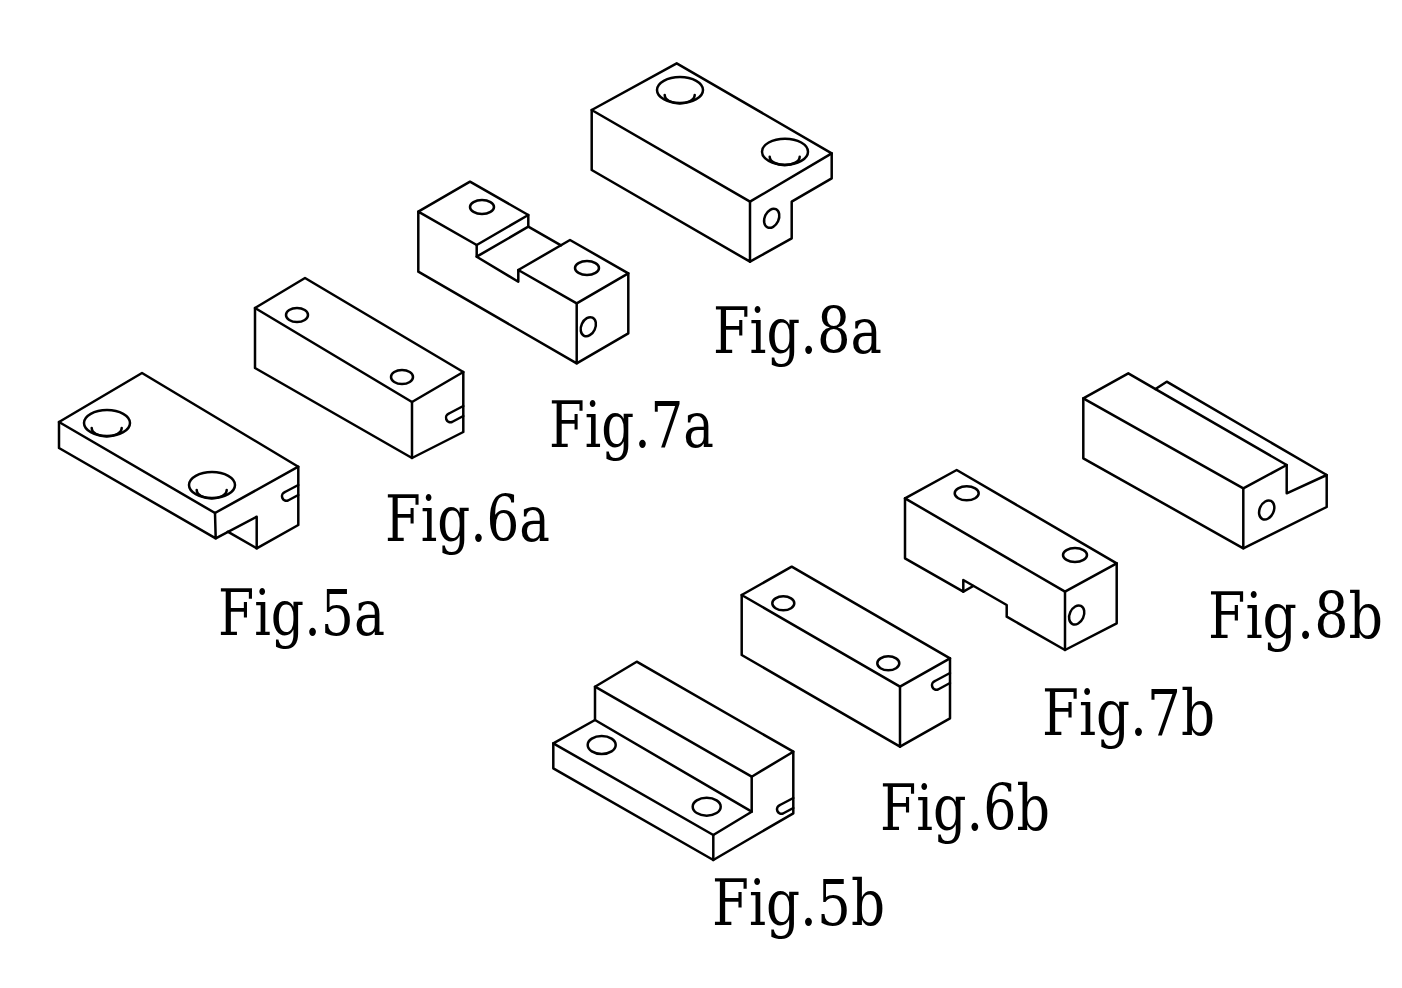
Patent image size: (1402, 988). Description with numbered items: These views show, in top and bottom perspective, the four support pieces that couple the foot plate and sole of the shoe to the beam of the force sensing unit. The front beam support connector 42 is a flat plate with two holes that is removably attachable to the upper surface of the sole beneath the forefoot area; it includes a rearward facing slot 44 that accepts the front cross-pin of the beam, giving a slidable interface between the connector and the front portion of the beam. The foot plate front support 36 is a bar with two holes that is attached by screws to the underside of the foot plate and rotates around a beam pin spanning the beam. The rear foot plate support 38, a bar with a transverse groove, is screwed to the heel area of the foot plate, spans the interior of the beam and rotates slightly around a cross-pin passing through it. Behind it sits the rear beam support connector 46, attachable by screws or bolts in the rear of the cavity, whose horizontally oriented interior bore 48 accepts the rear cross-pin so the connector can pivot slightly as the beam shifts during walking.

In FIG. 6A, the foot plate front support 36 is at (268, 347).
In FIG. 6B, the foot plate front support 36 is at (755, 620).
In FIG. 7A, the rear foot plate support 38 is at (430, 250).
In FIG. 7B, the rear foot plate support 38 is at (917, 538).
In FIG. 5A, the front beam support connector 42 is at (158, 458).
In FIG. 5B, the front beam support connector 42 is at (620, 810).
In FIG. 5A, the rearward facing slot 44 is at (295, 483).
In FIG. 8A, the rear beam support connector 46 is at (740, 127).
In FIG. 8B, the rear beam support connector 46 is at (1240, 426).
In FIG. 8A, the interior bore 48 is at (780, 213).
In FIG. 8B, the interior bore 48 is at (1277, 508).